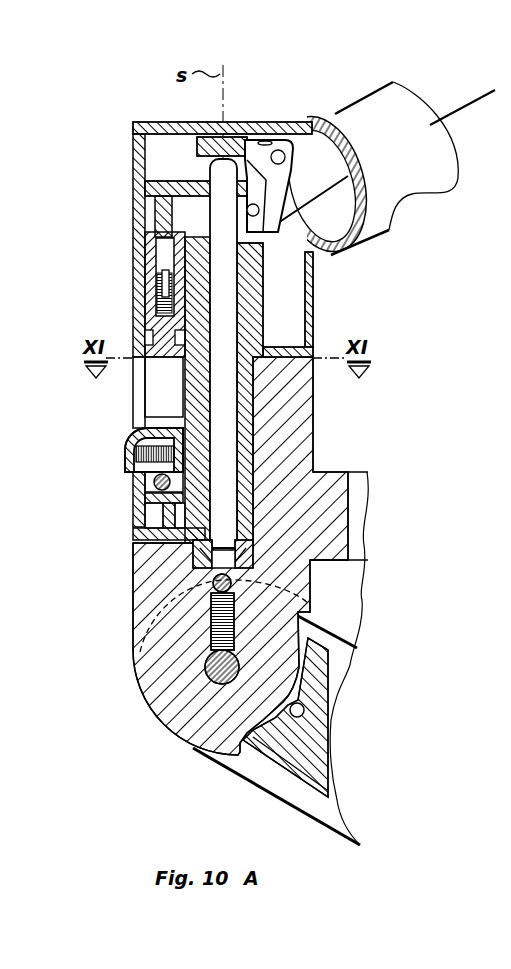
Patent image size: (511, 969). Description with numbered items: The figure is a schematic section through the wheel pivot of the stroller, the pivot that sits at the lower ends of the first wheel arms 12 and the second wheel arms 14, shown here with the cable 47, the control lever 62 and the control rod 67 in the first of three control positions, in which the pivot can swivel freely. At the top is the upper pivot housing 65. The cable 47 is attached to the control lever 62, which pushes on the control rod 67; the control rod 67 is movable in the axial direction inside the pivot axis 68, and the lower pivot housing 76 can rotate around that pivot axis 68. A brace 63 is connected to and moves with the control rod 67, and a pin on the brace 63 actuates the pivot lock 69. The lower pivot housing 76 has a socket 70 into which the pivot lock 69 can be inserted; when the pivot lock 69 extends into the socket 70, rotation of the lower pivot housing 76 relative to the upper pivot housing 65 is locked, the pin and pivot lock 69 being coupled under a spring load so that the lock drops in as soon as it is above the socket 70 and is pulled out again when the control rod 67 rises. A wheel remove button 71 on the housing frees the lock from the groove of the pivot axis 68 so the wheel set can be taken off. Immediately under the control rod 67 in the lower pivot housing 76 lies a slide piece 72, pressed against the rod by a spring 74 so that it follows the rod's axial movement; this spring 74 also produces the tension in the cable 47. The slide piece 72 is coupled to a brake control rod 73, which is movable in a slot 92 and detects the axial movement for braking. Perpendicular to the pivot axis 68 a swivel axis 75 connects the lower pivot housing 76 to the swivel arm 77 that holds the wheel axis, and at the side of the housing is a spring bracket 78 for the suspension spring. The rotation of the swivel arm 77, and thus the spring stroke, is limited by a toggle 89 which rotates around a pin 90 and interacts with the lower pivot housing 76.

The first wheel arm 12 is at (382, 172).
The second wheel arm 14 is at (414, 193).
The cable 47 is at (443, 122).
The control lever 62 is at (205, 140).
The brace 63 is at (150, 185).
The upper pivot housing 65 is at (135, 124).
The control rod 67 is at (230, 413).
The pivot axis 68 is at (255, 391).
The pivot lock 69 is at (157, 266).
The socket 70 is at (157, 393).
The wheel remove button 71 is at (140, 498).
The slide piece 72 is at (205, 568).
The brake control rod 73 is at (213, 585).
The spring 74 is at (210, 632).
The swivel axis 75 is at (205, 666).
The lower pivot housing 76 is at (293, 441).
The swivel arm 77 is at (240, 771).
The spring bracket 78 is at (365, 526).
The toggle 89 is at (305, 768).
The pin 90 is at (306, 710).
The slot 92 is at (175, 603).